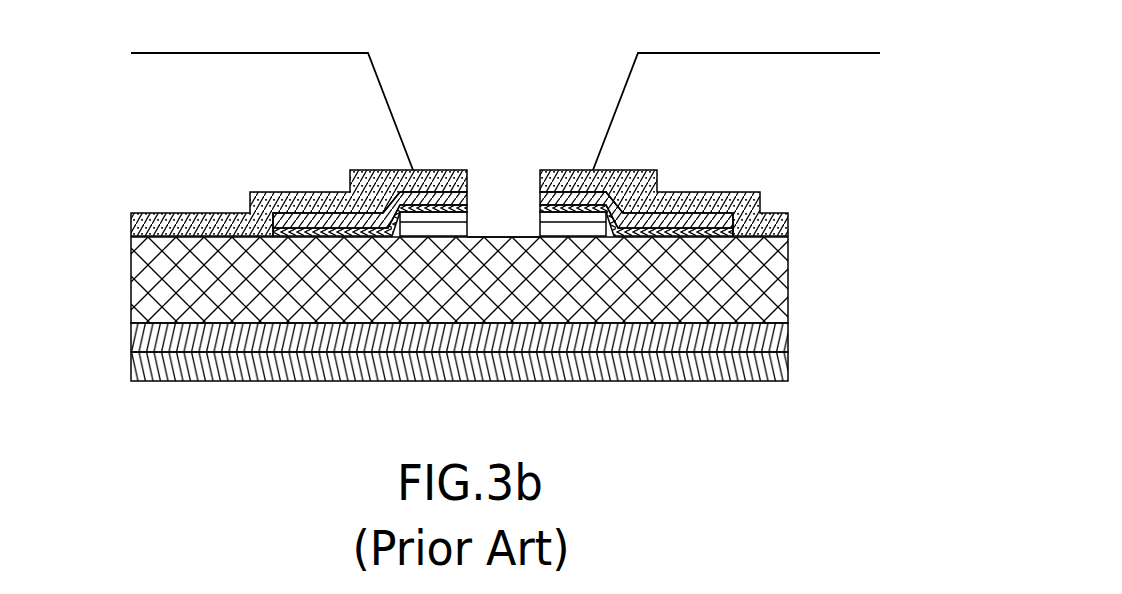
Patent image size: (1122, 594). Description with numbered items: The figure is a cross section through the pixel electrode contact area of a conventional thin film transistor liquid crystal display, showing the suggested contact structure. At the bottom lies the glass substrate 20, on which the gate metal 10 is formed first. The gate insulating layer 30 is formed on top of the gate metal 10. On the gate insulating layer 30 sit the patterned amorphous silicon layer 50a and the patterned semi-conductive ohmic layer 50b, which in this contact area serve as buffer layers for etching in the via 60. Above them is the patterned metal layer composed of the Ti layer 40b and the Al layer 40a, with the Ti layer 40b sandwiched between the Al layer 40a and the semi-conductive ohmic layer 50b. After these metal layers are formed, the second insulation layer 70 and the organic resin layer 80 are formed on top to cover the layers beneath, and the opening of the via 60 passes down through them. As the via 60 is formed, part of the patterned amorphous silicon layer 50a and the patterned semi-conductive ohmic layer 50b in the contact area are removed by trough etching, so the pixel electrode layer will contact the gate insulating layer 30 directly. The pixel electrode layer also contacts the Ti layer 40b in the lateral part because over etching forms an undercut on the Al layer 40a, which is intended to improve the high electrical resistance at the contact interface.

The gate metal 10 is at (787, 329).
The glass substrate 20 is at (777, 365).
The gate insulating layer 30 is at (773, 273).
The Al layer 40a is at (735, 222).
The Ti layer 40b is at (735, 230).
The patterned amorphous silicon layer 50a is at (467, 229).
The patterned semi-conductive ohmic layer 50b is at (540, 218).
The via 60 is at (461, 92).
The second insulation layer 70 is at (607, 178).
The organic resin layer 80 is at (742, 66).